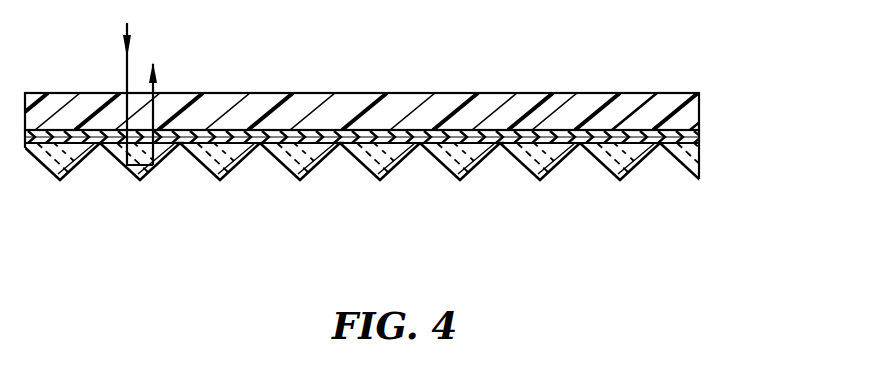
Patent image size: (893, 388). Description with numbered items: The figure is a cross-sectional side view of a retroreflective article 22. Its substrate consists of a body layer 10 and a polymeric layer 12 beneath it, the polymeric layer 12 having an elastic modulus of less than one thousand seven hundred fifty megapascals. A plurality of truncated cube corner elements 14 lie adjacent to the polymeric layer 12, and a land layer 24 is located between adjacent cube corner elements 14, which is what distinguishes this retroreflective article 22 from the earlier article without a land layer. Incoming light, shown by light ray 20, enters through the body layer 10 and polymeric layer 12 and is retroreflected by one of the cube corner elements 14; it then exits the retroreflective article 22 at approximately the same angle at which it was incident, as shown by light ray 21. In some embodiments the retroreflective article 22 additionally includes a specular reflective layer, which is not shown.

The body layer 10 is at (700, 107).
The polymeric layer 12 is at (700, 137).
The truncated cube corner elements 14 is at (700, 153).
The light ray 20 is at (126, 70).
The light ray 21 is at (155, 87).
The retroreflective article 22 is at (610, 66).
The land layer 24 is at (340, 216).